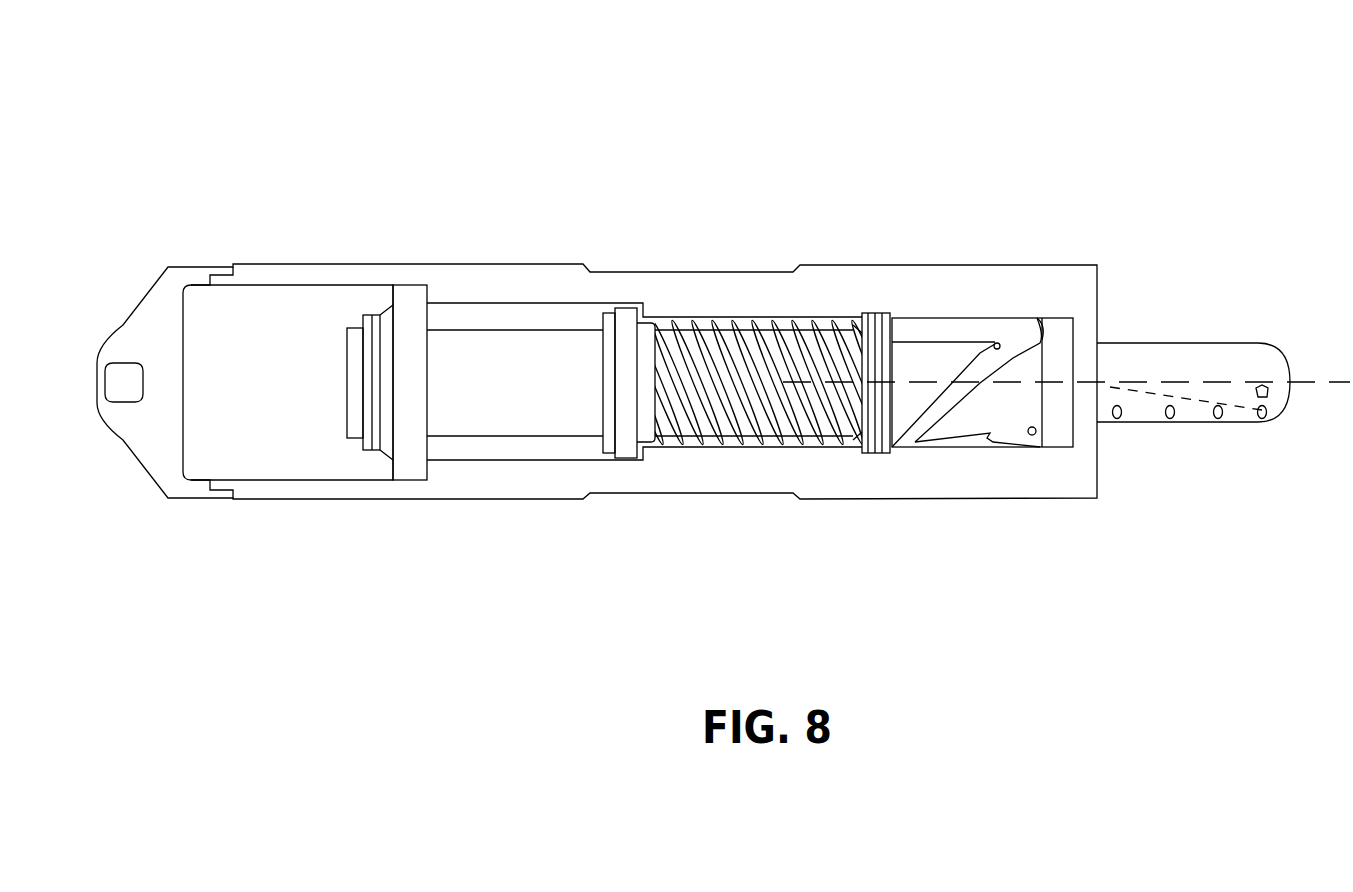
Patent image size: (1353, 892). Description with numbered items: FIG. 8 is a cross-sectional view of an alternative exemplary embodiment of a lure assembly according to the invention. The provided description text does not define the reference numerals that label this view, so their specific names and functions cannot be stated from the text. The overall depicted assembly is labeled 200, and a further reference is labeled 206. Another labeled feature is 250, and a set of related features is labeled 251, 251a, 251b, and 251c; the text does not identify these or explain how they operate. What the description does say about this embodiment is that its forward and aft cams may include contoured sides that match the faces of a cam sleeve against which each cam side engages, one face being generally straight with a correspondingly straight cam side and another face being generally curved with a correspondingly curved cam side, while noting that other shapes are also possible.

The actuator assembly 200 is at (1132, 107).
The longitudinal axis 206 is at (1165, 385).
The mounting tab 250 is at (1143, 392).
The aperture 251 is at (1262, 422).
The aperture 251a is at (1222, 422).
The aperture 251b is at (1166, 422).
The aperture 251c is at (1116, 422).